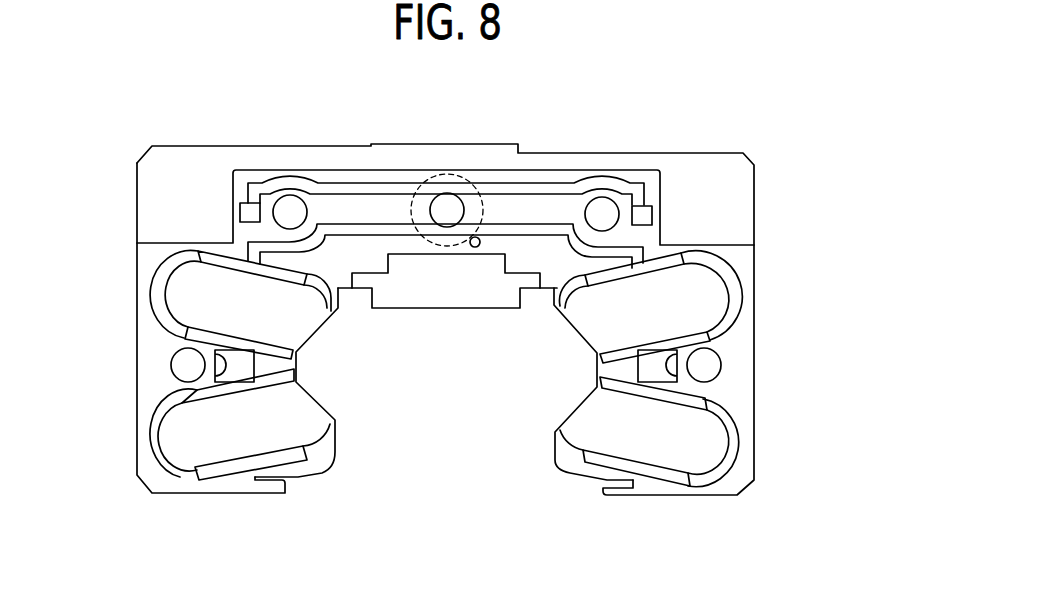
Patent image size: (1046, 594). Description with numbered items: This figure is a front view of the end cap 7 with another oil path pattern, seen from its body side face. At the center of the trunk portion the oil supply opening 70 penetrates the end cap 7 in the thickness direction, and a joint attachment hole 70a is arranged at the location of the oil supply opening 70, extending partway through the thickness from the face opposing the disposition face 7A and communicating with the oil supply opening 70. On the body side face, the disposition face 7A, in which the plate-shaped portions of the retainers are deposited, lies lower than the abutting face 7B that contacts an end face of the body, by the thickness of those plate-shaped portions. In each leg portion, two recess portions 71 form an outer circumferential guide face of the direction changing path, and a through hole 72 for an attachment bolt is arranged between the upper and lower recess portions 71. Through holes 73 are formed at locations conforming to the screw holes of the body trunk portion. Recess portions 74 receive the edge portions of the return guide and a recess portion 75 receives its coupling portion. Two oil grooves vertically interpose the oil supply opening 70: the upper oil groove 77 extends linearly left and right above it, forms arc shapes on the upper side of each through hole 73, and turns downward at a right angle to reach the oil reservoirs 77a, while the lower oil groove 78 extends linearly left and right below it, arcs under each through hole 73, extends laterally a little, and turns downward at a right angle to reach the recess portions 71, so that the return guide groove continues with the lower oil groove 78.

The end cap 7 is at (684, 153).
The disposition face 7A is at (616, 270).
The abutting face 7B is at (730, 172).
The oil supply opening 70 is at (431, 216).
The joint attachment hole 70a is at (472, 243).
The recess portion 71 is at (180, 293).
The through hole 72 is at (184, 372).
The through hole 73 is at (274, 203).
The recess portion 74 is at (202, 248).
The recess portion 75 is at (208, 379).
The upper oil groove 77 is at (494, 190).
The oil reservoir 77a is at (240, 211).
The lower oil groove 78 is at (354, 226).